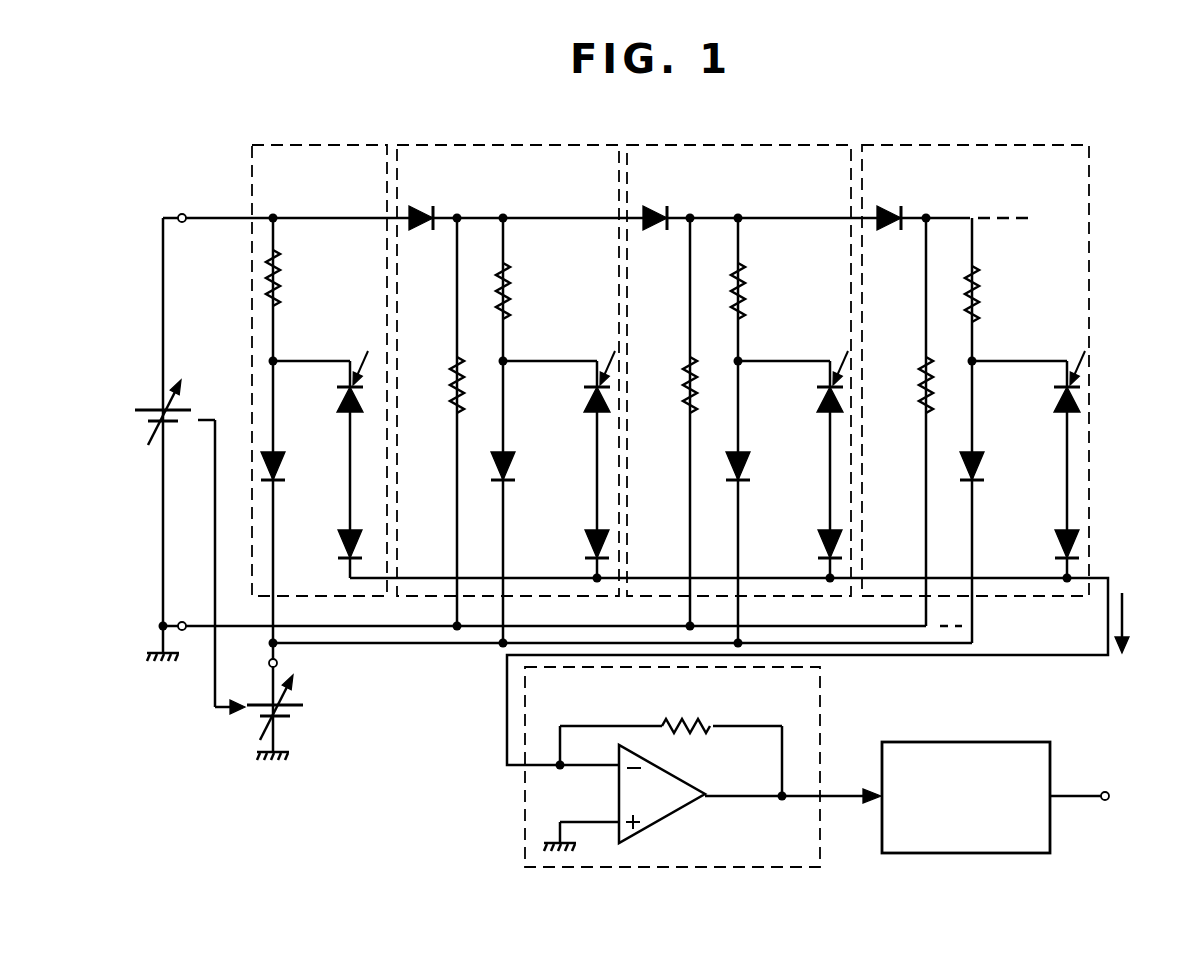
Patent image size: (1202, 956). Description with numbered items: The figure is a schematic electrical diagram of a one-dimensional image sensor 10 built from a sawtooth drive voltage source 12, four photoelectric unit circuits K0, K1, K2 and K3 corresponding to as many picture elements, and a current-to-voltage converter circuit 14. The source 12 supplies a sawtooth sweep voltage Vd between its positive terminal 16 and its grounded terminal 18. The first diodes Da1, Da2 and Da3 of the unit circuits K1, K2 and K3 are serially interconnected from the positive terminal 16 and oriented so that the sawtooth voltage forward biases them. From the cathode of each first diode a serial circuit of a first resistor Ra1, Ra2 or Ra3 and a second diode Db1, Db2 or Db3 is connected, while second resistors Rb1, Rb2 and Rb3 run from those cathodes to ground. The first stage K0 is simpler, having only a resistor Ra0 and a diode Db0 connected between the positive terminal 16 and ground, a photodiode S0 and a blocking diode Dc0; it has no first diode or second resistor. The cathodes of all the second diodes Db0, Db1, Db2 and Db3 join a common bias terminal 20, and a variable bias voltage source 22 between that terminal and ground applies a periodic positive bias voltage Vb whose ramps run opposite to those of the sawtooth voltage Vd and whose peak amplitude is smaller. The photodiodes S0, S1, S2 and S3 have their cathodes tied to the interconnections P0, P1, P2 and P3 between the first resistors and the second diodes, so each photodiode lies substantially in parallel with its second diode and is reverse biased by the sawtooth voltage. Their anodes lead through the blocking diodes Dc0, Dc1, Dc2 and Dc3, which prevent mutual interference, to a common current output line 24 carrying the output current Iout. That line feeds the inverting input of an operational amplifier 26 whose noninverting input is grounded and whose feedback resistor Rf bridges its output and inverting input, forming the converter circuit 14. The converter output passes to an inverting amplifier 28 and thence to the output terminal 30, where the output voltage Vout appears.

The image sensor 10 is at (1105, 108).
The sawtooth drive voltage source 12 is at (163, 412).
The current-to-voltage converter circuit 14 is at (704, 767).
The positive terminal 16 is at (181, 215).
The grounded terminal 18 is at (184, 631).
The common bias terminal 20 is at (278, 664).
The variable bias voltage source 22 is at (290, 702).
The common current output line 24 is at (1065, 668).
The operational amplifier 26 is at (682, 808).
The inverting amplifier 28 is at (950, 742).
The output terminal 30 is at (1105, 791).
The first stage photoelectric unit circuit K0 is at (316, 145).
The photoelectric unit circuit K1 is at (497, 145).
The photoelectric unit circuit K2 is at (720, 145).
The photoelectric unit circuit K3 is at (950, 145).
The resistor Ra0 is at (301, 278).
The first resistor Ra1 is at (510, 275).
The first resistor Ra2 is at (745, 275).
The first resistor Ra3 is at (979, 280).
The second resistor Rb1 is at (451, 369).
The second resistor Rb2 is at (684, 369).
The second resistor Rb3 is at (920, 369).
The first diode Da1 is at (421, 212).
The first diode Da2 is at (655, 212).
The first diode Da3 is at (889, 212).
The diode Db0 is at (283, 466).
The second diode Db1 is at (513, 466).
The second diode Db2 is at (748, 466).
The second diode Db3 is at (982, 466).
The blocking diode Dc0 is at (340, 552).
The blocking diode Dc1 is at (583, 552).
The blocking diode Dc2 is at (817, 552).
The blocking diode Dc3 is at (1055, 552).
The photodiode S0 is at (340, 394).
The photodiode S1 is at (586, 394).
The photodiode S2 is at (819, 394).
The photodiode S3 is at (1054, 394).
The interconnection P0 is at (274, 361).
The interconnection P1 is at (504, 361).
The interconnection P2 is at (741, 361).
The interconnection P3 is at (975, 361).
The feedback resistor Rf is at (686, 712).
The sawtooth sweep voltage Vd is at (160, 323).
The bias voltage Vb is at (273, 665).
The output current Iout is at (1146, 623).
The output voltage Vout is at (1113, 827).